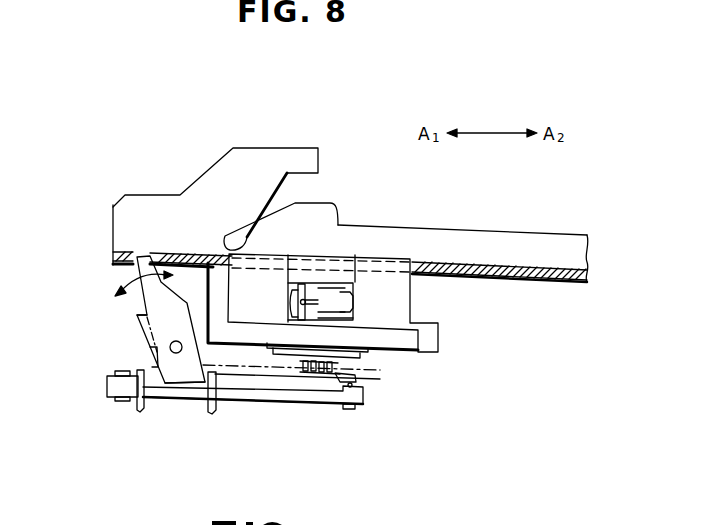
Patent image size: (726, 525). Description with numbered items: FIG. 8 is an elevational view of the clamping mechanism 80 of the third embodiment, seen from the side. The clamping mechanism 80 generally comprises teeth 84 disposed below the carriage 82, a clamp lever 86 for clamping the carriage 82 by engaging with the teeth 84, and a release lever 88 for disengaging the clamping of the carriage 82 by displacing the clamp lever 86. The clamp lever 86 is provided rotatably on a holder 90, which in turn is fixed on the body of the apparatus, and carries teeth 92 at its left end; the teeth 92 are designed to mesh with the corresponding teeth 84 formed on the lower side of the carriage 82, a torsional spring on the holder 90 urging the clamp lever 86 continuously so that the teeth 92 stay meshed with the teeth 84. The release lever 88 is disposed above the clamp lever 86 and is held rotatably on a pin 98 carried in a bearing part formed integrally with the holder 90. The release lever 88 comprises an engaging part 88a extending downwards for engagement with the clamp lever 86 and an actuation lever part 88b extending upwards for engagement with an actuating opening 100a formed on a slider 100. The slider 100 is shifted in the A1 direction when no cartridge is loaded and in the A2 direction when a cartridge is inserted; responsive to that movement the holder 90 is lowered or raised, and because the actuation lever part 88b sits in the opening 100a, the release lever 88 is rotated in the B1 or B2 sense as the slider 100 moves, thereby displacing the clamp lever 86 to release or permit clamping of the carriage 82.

The clamping mechanism 80 is at (400, 95).
The carriage 82 is at (389, 302).
The teeth 84 is at (352, 375).
The clamp lever 86 is at (279, 405).
The release lever 88 is at (136, 328).
The engaging part 88a is at (214, 388).
The actuation lever part 88b is at (140, 252).
The holder 90 is at (210, 414).
The teeth 92 is at (352, 382).
The pin 98 is at (170, 347).
The slider 100 is at (489, 253).
The actuating opening 100a is at (137, 256).